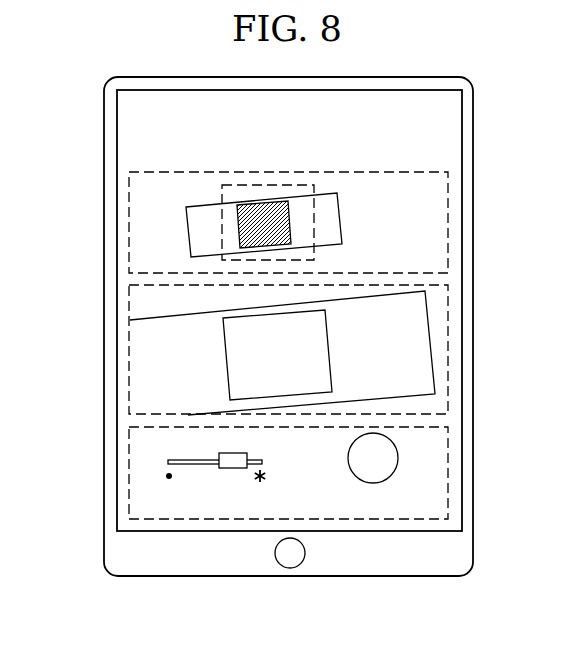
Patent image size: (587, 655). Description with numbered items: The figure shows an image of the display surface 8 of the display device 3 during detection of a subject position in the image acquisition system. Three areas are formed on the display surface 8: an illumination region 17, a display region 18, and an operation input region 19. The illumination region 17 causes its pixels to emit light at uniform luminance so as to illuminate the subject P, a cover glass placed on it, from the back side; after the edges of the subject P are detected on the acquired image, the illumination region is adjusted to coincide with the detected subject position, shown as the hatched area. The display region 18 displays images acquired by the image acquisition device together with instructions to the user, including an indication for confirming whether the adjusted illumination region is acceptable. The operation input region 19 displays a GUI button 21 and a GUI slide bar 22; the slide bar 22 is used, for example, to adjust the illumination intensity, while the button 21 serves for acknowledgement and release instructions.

The display device 3 is at (99, 146).
The display surface 8 is at (438, 138).
The illumination region 17 is at (448, 212).
The subject P is at (262, 205).
The display region 18 is at (448, 348).
The operation input region 19 is at (448, 470).
The GUI button 21 is at (406, 452).
The GUI slide bar 22 is at (215, 478).